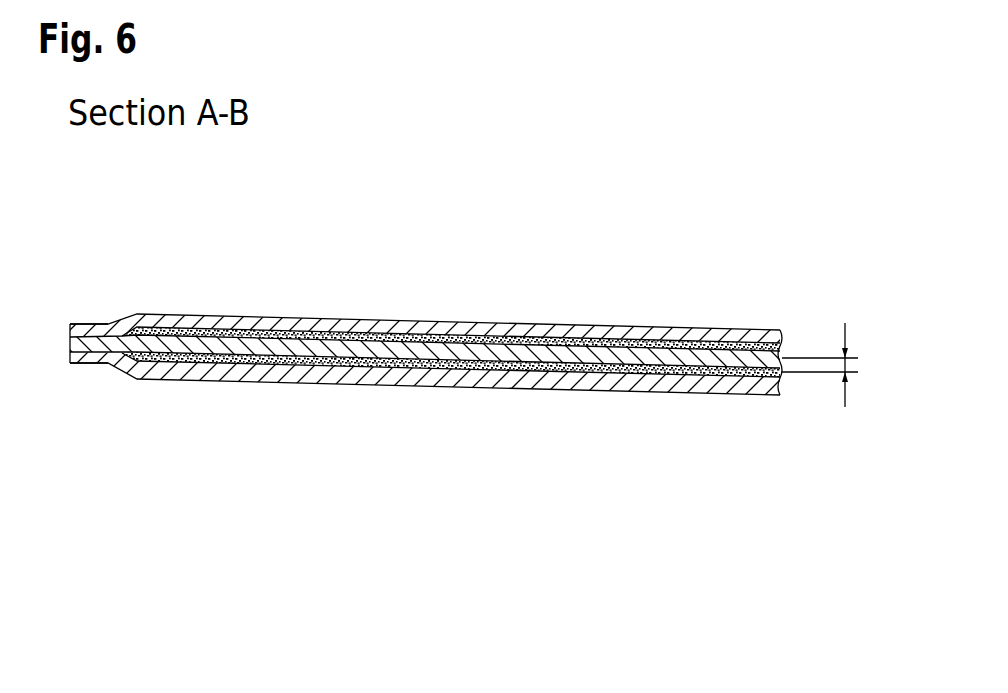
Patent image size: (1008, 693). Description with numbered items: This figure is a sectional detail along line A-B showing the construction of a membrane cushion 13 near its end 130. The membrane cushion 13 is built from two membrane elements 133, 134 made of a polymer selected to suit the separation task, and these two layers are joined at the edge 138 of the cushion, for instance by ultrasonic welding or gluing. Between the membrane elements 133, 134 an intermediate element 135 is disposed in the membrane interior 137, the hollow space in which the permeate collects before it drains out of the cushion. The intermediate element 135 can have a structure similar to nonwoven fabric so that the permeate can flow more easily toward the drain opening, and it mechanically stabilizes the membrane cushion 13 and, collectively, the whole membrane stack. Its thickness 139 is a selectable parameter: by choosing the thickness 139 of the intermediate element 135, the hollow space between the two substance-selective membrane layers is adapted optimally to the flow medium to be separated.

The membrane cushion 13 is at (686, 244).
The end of membrane cushion 130 is at (450, 358).
The membrane element 133 is at (465, 308).
The membrane element 134 is at (469, 403).
The intermediate element 135 is at (640, 385).
The membrane interior 137 is at (269, 328).
The edge 138 is at (85, 328).
The thickness of intermediate element 139 is at (862, 322).